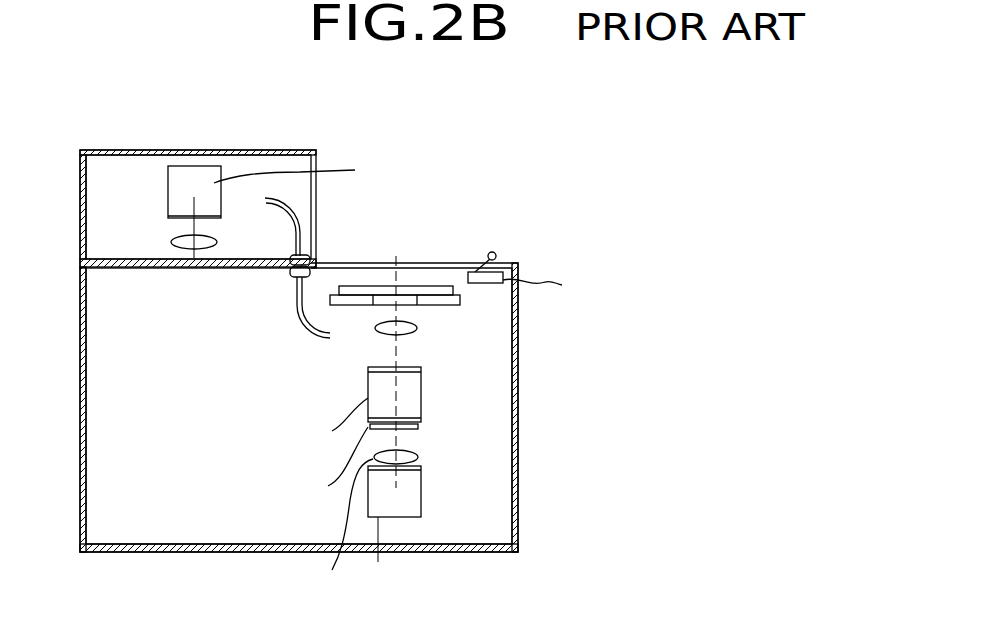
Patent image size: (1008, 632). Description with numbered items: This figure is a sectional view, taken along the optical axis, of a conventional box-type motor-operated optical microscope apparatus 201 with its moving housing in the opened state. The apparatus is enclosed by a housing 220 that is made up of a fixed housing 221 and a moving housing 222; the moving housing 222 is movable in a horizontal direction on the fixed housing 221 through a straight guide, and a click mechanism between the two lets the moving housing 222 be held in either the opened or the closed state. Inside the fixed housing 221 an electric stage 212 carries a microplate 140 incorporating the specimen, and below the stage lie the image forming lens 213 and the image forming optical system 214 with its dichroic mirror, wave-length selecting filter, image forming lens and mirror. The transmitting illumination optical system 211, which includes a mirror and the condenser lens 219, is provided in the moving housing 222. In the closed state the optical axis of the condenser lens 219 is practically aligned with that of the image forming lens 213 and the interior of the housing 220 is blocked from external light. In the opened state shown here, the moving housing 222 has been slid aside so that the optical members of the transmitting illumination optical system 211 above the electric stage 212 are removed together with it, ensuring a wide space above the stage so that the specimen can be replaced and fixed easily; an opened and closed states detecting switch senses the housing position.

The optical microscope apparatus 201 is at (498, 190).
The transmitting illumination optical system 211 is at (147, 163).
The electric stage 212 is at (362, 305).
The image forming lens 213 is at (378, 335).
The image forming optical system 214 is at (433, 315).
The condenser lens 219 is at (214, 240).
The housing 220 is at (533, 265).
The fixed housing 221 is at (518, 395).
The moving housing 222 is at (317, 236).
The microplate 140 is at (445, 290).